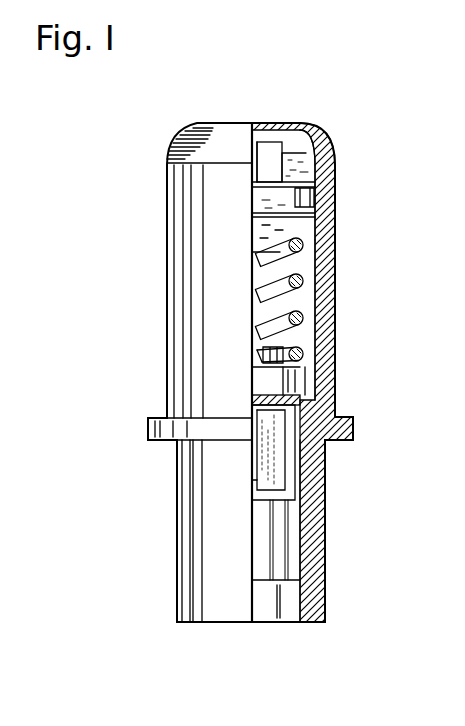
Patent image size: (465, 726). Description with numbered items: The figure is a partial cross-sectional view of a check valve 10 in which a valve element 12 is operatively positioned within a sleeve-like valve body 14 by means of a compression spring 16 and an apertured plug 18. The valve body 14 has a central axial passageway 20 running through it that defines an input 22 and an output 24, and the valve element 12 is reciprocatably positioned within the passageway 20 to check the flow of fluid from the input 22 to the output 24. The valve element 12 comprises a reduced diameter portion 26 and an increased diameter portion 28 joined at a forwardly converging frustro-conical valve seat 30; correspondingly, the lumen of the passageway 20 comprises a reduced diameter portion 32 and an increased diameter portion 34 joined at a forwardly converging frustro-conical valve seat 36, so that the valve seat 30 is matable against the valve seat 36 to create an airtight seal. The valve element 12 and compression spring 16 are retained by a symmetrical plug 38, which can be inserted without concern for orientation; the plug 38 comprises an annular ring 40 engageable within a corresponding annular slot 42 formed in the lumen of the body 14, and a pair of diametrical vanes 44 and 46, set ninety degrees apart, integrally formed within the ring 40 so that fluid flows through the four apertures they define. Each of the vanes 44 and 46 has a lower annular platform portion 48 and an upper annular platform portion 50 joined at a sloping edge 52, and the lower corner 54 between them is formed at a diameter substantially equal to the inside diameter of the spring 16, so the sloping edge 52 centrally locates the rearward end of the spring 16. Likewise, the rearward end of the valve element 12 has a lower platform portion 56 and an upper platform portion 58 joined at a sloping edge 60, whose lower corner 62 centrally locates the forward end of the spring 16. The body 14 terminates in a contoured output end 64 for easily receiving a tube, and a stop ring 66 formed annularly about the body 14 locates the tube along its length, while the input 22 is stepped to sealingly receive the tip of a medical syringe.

The check valve 10 is at (130, 116).
The valve element 12 is at (258, 464).
The valve body 14 is at (340, 298).
The compression spring 16 is at (262, 294).
The apertured plug 18 is at (333, 200).
The central axial passageway 20 is at (300, 264).
The input 22 is at (210, 648).
The output 24 is at (310, 76).
The reduced diameter portion 26 is at (300, 477).
The increased diameter portion 28 is at (310, 398).
The frustro-conical valve seat 30 is at (336, 412).
The reduced diameter portion 32 is at (275, 497).
The increased diameter portion 34 is at (337, 318).
The frustro-conical valve seat 36 is at (353, 428).
The symmetrical plug 38 is at (268, 236).
The annular ring 40 is at (325, 178).
The annular slot 42 is at (316, 196).
The diametrical vane 44 is at (283, 158).
The diametrical vane 46 is at (272, 150).
The lower annular platform portion 48 is at (305, 160).
The upper annular platform portion 50 is at (257, 128).
The sloping edge 52 is at (308, 146).
The lower corner 54 is at (262, 197).
The lower platform portion 56 is at (307, 364).
The upper platform portion 58 is at (268, 342).
The sloping edge 60 is at (275, 355).
The lower corner 62 is at (283, 368).
The contoured output end 64 is at (172, 152).
The stop ring 66 is at (170, 430).